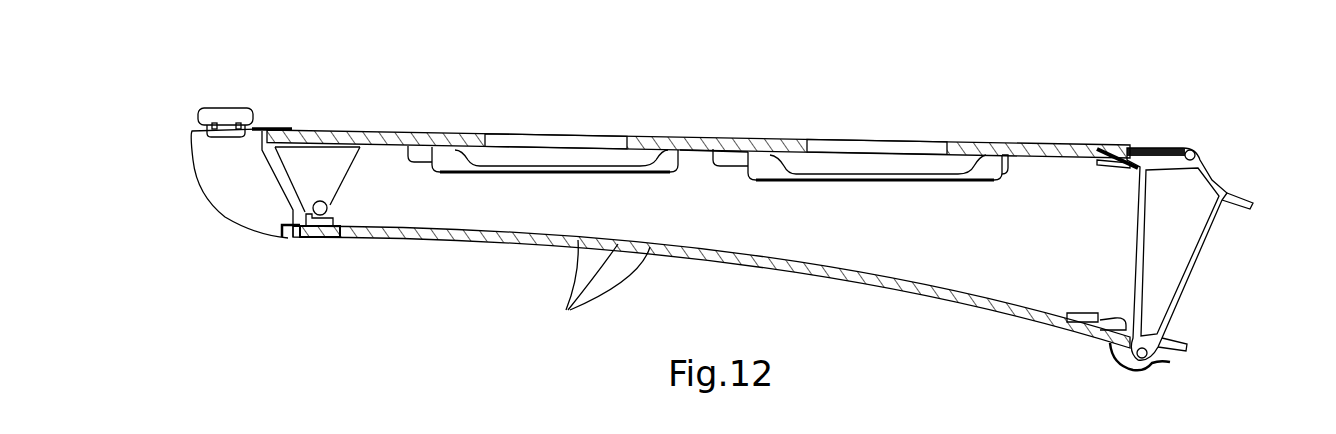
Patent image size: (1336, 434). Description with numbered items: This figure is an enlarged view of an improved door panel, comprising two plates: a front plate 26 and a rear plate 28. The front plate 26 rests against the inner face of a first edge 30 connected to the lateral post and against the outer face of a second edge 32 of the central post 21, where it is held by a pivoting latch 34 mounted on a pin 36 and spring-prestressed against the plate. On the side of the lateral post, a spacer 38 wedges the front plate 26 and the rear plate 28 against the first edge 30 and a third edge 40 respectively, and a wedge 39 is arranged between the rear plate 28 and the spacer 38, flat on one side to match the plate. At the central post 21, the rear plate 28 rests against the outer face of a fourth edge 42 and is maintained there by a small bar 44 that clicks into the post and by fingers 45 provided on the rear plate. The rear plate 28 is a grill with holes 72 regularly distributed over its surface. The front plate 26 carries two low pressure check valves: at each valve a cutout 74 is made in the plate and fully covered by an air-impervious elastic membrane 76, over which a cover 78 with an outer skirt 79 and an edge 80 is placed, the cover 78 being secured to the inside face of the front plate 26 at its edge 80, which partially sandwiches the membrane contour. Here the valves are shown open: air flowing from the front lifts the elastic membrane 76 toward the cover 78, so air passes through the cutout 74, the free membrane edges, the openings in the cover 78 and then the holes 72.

The central post 21 is at (1180, 224).
The front plate 26 is at (1050, 144).
The rear plate 28 is at (364, 240).
The first edge 30 is at (279, 126).
The second edge 32 is at (1243, 195).
The pivoting latch 34 is at (1160, 144).
The pin 36 is at (1194, 148).
The spacer 38 is at (313, 168).
The wedge 39 is at (290, 232).
The third edge 40 is at (320, 240).
The fourth edge 42 is at (1120, 318).
The small bar 44 is at (1130, 366).
The finger 45 is at (1086, 311).
The holes 72 is at (601, 290).
The cutout 74 is at (537, 133).
The elastic membrane 76 is at (672, 175).
The cover 78 is at (540, 174).
The outer skirt 79 is at (747, 170).
The edge 80 is at (410, 152).